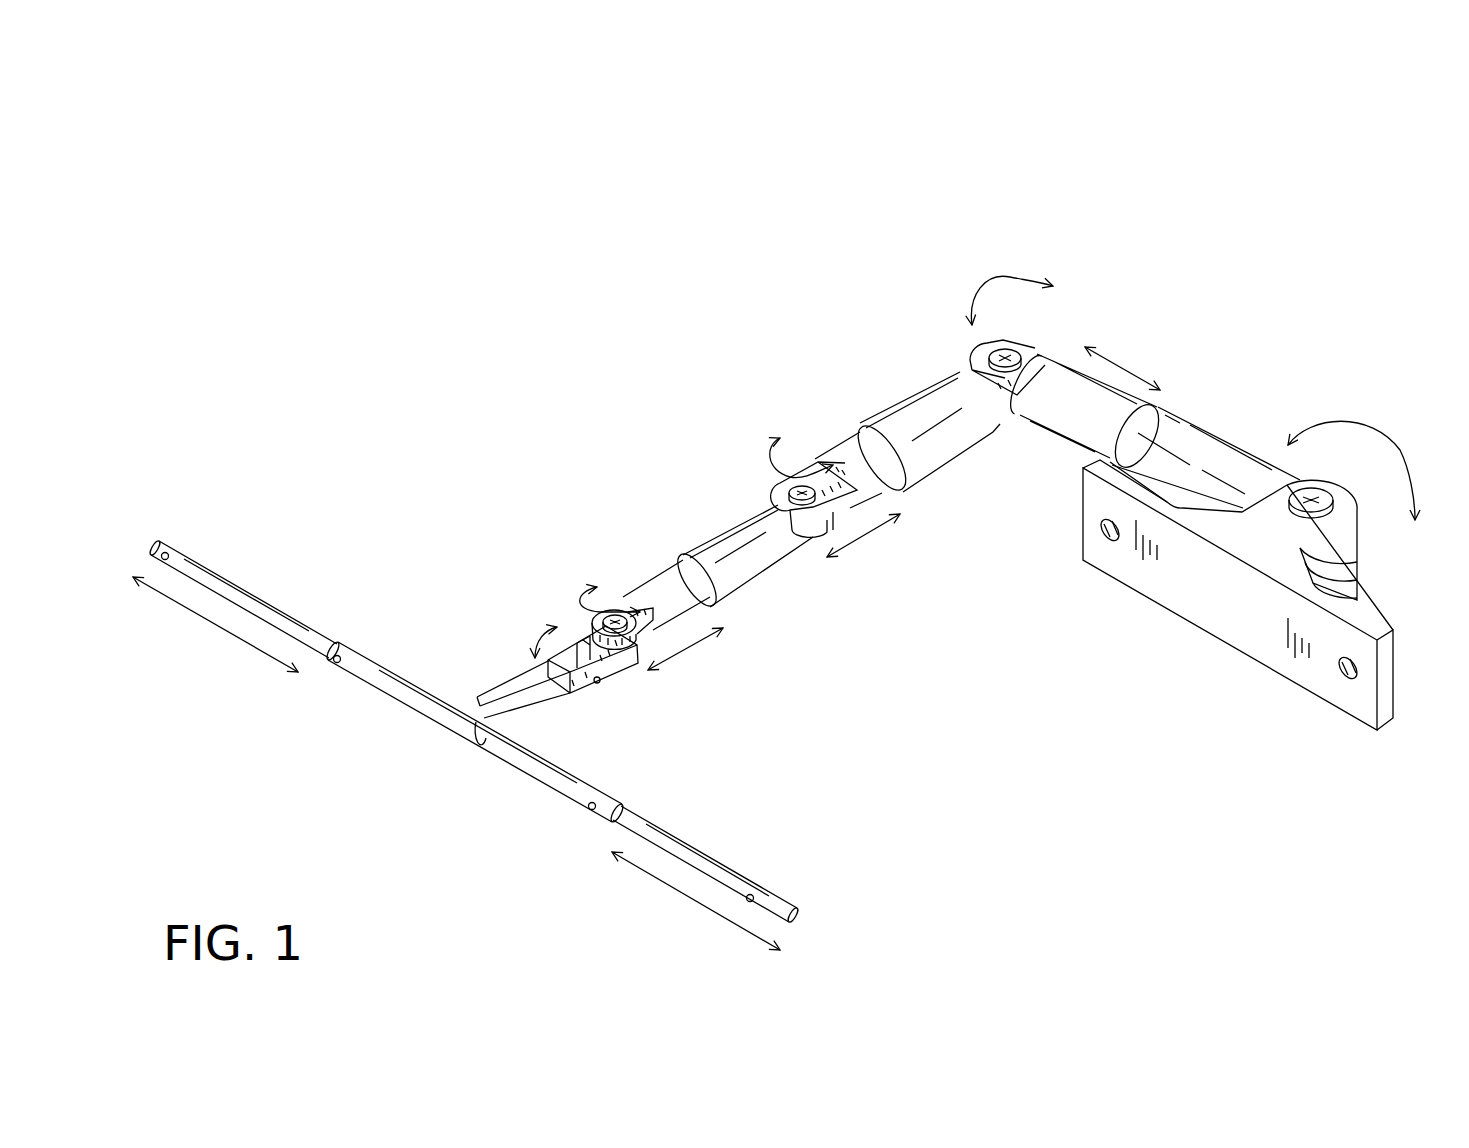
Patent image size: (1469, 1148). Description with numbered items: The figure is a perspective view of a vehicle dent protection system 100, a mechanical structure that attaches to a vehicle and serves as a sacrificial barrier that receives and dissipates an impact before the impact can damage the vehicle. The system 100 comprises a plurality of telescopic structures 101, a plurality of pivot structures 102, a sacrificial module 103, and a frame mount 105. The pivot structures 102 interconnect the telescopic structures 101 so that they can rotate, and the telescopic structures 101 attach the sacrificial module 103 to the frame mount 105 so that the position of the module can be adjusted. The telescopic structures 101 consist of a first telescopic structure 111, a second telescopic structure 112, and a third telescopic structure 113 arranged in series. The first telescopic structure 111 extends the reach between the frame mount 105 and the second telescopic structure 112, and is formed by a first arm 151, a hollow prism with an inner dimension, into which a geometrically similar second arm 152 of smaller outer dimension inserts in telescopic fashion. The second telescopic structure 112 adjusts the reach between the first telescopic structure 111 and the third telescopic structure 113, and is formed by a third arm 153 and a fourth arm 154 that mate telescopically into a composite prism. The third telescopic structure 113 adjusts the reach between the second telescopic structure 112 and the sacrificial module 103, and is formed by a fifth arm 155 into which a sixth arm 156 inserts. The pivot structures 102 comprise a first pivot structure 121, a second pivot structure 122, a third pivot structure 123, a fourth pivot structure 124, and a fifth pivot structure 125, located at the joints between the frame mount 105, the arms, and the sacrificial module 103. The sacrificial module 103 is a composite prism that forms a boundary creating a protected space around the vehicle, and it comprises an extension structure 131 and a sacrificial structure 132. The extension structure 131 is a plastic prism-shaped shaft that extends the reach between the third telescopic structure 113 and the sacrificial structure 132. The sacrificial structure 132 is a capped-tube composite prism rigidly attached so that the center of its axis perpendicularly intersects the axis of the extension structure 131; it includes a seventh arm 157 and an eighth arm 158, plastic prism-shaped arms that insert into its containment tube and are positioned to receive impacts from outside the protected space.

The vehicle dent protection system 100 is at (270, 191).
The plurality of telescopic structures 101 is at (423, 52).
The plurality of pivot structures 102 is at (673, 43).
The sacrificial module 103 is at (164, 530).
The frame mount 105 is at (1253, 623).
The first telescopic structure 111 is at (1198, 387).
The second telescopic structure 112 is at (898, 336).
The third telescopic structure 113 is at (680, 522).
The first pivot structure 121 is at (1317, 497).
The second pivot structure 122 is at (1007, 357).
The third pivot structure 123 is at (805, 487).
The fourth pivot structure 124 is at (613, 615).
The fifth pivot structure 125 is at (593, 681).
The extension structure 131 is at (523, 643).
The sacrificial structure 132 is at (530, 763).
The first arm 151 is at (1190, 440).
The second arm 152 is at (1107, 383).
The third arm 153 is at (960, 457).
The fourth arm 154 is at (882, 488).
The fifth arm 155 is at (762, 577).
The sixth arm 156 is at (683, 620).
The seventh arm 157 is at (748, 862).
The eighth arm 158 is at (292, 606).